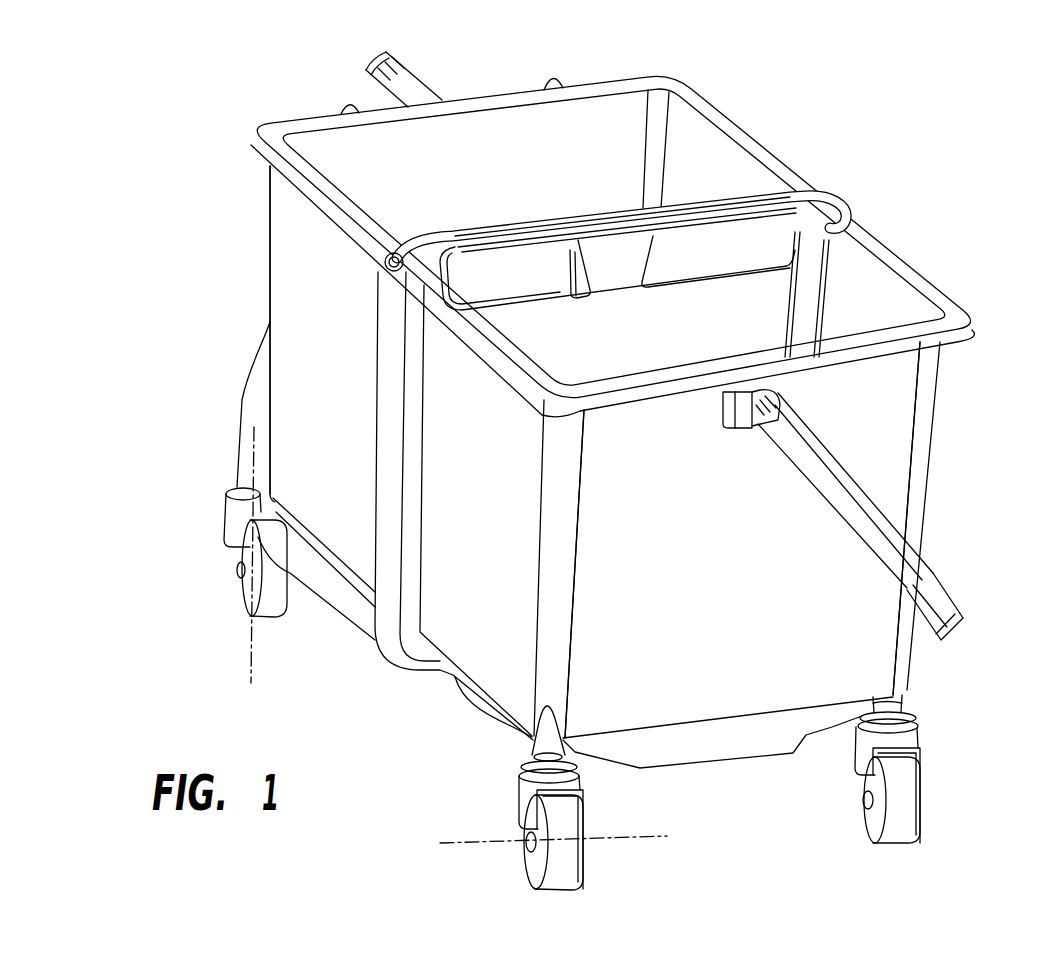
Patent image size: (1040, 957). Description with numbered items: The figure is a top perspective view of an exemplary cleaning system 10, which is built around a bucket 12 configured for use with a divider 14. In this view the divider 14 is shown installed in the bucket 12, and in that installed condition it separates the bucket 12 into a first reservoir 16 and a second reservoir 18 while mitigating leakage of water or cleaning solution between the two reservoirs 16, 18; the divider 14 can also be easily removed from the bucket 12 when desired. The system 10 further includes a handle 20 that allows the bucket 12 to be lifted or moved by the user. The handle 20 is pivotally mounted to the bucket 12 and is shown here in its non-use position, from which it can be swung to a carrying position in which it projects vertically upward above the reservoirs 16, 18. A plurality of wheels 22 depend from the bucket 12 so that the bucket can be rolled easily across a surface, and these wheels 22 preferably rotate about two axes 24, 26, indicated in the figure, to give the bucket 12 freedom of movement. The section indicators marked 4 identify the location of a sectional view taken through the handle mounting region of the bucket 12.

The section line for FIG. 4 is at (373, 54).
The cleaning system 10 is at (882, 103).
The bucket 12 is at (963, 315).
The divider 14 is at (745, 190).
The first reservoir 16 is at (350, 158).
The second reservoir 18 is at (862, 305).
The handle 20 is at (958, 607).
The wheels 22 is at (237, 600).
The axis 24 is at (457, 847).
The axis 26 is at (251, 645).